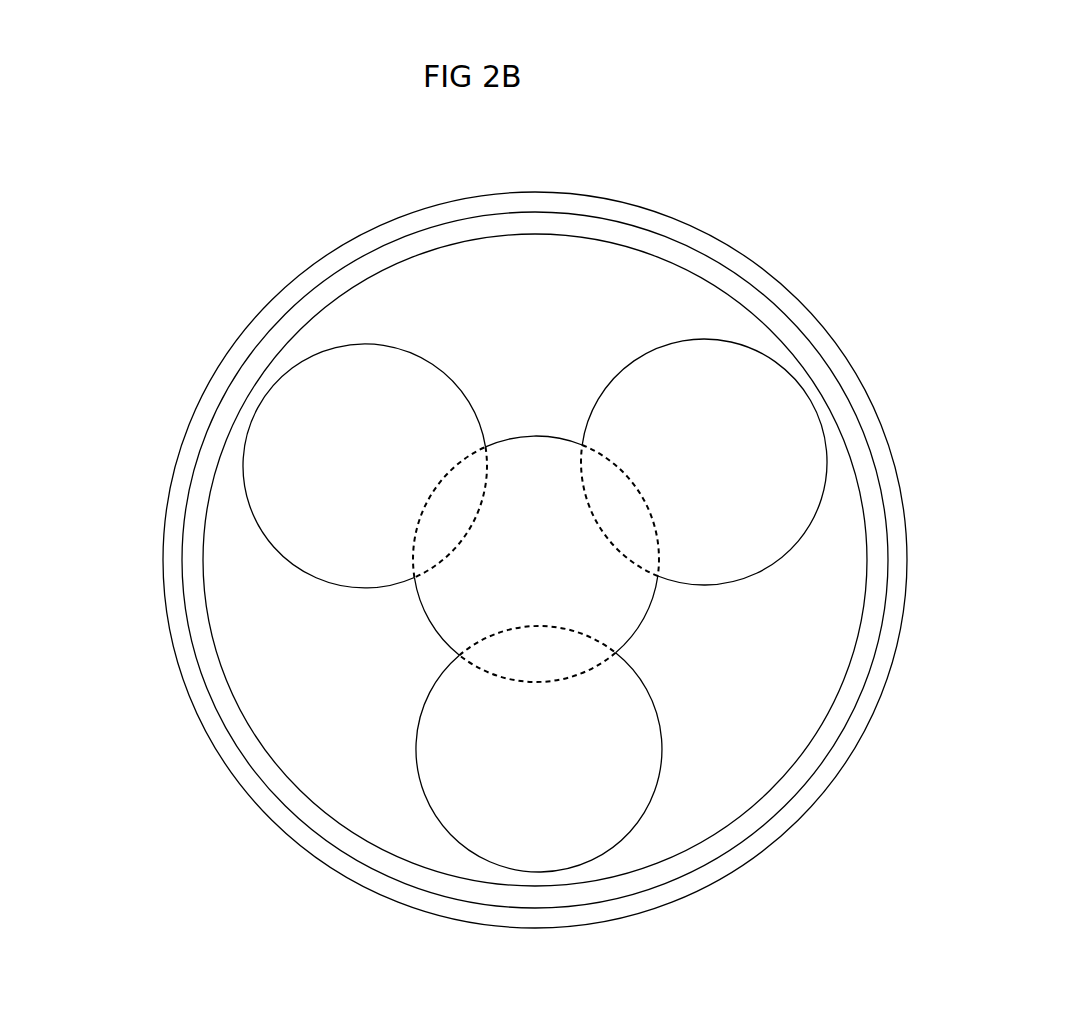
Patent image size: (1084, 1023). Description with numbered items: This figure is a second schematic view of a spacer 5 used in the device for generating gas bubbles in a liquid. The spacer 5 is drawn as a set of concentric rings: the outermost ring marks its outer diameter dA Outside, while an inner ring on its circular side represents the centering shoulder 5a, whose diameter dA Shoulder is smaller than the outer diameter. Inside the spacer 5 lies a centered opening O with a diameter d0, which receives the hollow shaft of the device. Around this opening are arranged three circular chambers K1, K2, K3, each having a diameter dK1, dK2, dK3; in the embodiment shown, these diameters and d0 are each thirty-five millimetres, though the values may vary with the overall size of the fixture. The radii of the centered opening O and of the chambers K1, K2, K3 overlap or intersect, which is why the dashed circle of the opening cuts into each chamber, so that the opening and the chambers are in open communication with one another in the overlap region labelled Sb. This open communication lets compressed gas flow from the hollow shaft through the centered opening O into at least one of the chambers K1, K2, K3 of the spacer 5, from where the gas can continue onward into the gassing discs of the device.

The spacer 5 is at (640, 207).
The centering shoulder 5a is at (713, 272).
The central contact circle Sb is at (602, 510).
The circular chamber K1 is at (803, 423).
The circular chamber K2 is at (527, 848).
The circular chamber K3 is at (283, 406).
The centered opening O is at (447, 598).
The spacer diameter dA is at (812, 842).
The diameter of first chamber dK1 is at (610, 333).
The diameter of second chamber dK2 is at (702, 753).
The diameter of third chamber dK3 is at (445, 331).
The diameter of centered opening d0 is at (405, 454).